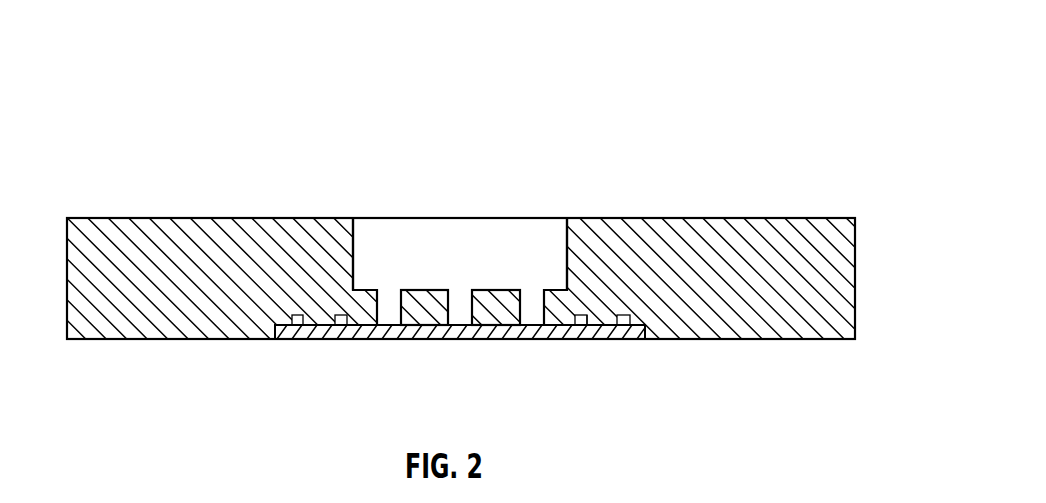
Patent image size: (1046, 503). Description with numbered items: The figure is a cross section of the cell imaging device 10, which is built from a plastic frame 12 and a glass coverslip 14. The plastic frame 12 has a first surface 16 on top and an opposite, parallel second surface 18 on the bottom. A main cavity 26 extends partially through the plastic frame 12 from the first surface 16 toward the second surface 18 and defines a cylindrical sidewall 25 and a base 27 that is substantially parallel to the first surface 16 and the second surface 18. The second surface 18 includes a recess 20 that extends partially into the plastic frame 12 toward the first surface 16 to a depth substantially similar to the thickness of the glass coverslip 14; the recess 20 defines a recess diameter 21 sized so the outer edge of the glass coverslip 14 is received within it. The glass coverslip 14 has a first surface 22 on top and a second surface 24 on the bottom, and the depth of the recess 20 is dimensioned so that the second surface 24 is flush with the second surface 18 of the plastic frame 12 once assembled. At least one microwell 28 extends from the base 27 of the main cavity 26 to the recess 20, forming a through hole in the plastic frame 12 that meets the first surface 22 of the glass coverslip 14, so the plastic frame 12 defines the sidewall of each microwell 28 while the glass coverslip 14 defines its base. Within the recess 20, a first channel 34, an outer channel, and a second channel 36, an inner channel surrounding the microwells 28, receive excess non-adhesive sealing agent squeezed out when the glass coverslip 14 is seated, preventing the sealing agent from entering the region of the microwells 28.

The cell imaging device 10 is at (134, 30).
The plastic frame 12 is at (866, 224).
The glass coverslip 14 is at (530, 350).
The first surface 16 is at (120, 218).
The second surface 18 is at (113, 339).
The recess 20 is at (265, 330).
The recess diameter 21 is at (647, 334).
The first surface 22 is at (589, 315).
The second surface 24 is at (582, 339).
The sidewall 25 is at (567, 228).
The main cavity 26 is at (353, 246).
The base 27 is at (420, 290).
The microwell 28 is at (378, 318).
The first channel 34 is at (298, 314).
The second channel 36 is at (340, 315).